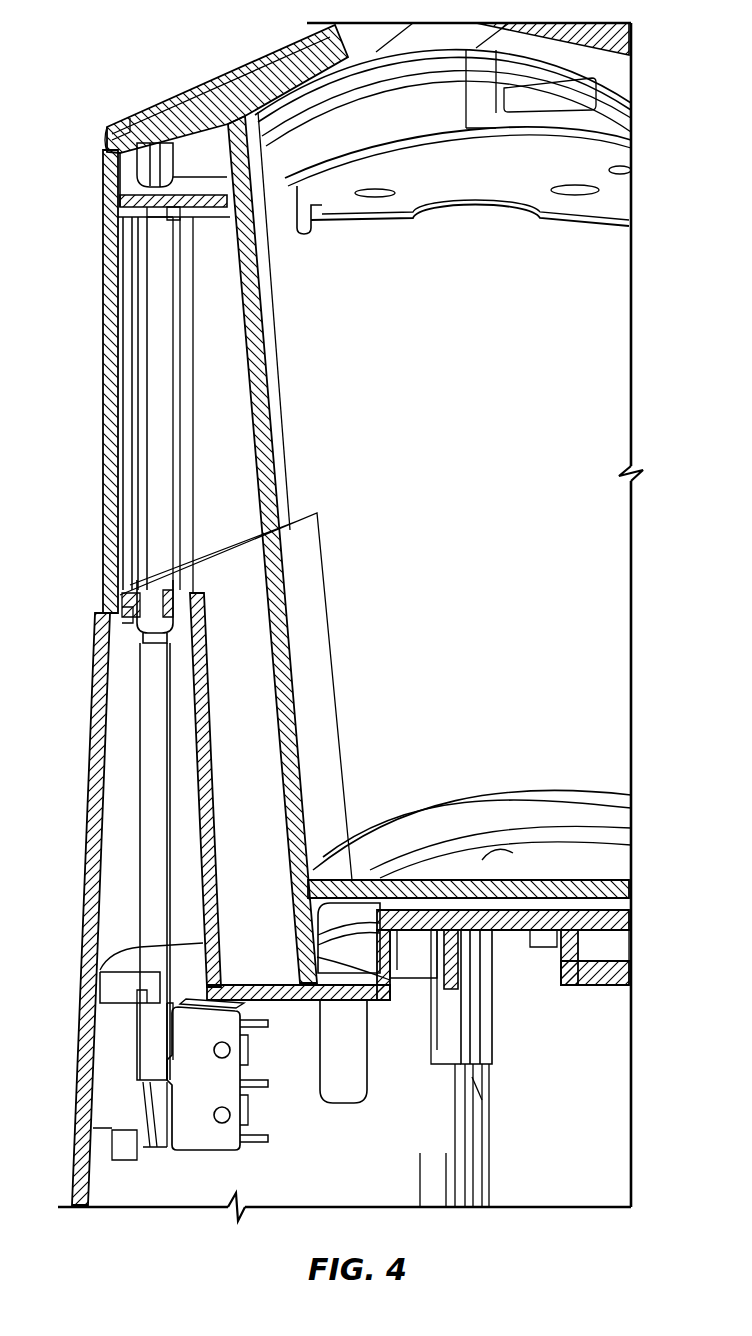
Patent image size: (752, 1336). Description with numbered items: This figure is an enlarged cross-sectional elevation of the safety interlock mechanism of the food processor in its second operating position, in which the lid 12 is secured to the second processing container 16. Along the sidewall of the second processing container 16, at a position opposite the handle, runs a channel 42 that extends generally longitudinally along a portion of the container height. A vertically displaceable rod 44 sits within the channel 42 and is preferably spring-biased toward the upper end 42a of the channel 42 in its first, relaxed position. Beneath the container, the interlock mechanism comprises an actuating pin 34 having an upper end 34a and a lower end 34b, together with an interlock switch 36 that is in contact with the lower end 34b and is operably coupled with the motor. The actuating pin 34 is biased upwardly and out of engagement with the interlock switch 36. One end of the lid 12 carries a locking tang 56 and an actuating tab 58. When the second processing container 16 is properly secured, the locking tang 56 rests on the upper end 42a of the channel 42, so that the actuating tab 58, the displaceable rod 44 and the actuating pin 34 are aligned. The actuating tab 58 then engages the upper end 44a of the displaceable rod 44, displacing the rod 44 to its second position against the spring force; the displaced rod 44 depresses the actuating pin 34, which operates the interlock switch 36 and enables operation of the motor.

The lid 12 is at (181, 110).
The second processing container 16 is at (607, 343).
The actuating pin 34 is at (150, 762).
The upper end 34a is at (150, 652).
The lower end 34b is at (150, 1055).
The interlock switch 36 is at (183, 1045).
The channel 42 is at (100, 425).
The upper end of the channel 42a is at (100, 203).
The displaceable rod 44 is at (153, 382).
The upper end of the displaceable rod 44a is at (157, 197).
The locking tang 56 is at (130, 117).
The actuating tab 58 is at (147, 163).